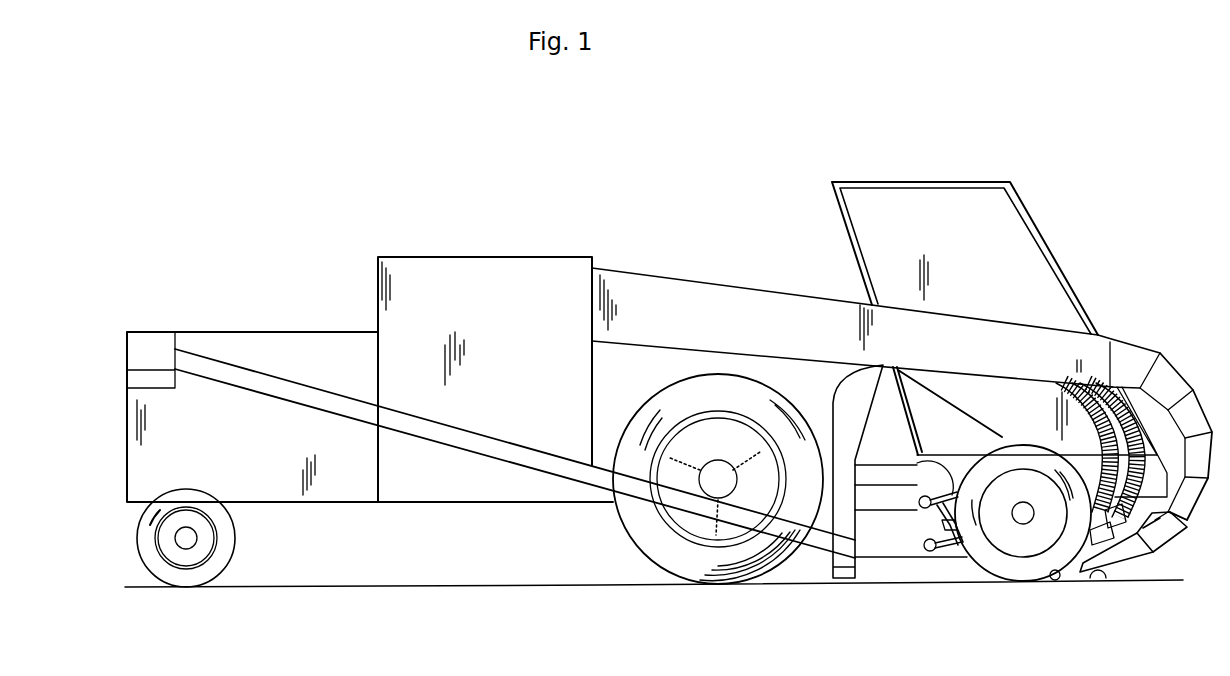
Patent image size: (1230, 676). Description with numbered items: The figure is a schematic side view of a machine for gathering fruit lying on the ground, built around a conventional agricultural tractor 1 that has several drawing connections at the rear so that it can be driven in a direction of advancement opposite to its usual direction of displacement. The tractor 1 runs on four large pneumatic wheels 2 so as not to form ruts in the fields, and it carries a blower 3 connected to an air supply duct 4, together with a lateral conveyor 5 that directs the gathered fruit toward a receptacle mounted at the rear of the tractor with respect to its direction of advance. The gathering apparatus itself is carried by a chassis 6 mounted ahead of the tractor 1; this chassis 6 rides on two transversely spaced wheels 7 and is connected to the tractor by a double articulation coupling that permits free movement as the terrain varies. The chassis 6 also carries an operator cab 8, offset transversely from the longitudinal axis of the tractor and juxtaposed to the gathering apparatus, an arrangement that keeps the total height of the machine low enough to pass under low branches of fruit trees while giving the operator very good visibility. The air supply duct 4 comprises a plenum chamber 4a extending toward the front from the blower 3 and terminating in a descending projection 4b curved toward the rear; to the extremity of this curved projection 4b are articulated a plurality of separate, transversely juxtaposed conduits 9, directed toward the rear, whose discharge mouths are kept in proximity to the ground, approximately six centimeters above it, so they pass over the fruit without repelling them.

The agricultural tractor 1 is at (347, 478).
The wheels 2 is at (220, 560).
The blower 3 is at (428, 262).
The air supply duct 4 is at (911, 377).
The plenum chamber 4a is at (695, 298).
The descending projection 4b is at (1203, 398).
The lateral conveyor 5 is at (483, 443).
The chassis 6 is at (943, 553).
The wheels 7 is at (1032, 573).
The operator cab 8 is at (1027, 248).
The separate conduits 9 is at (1127, 552).